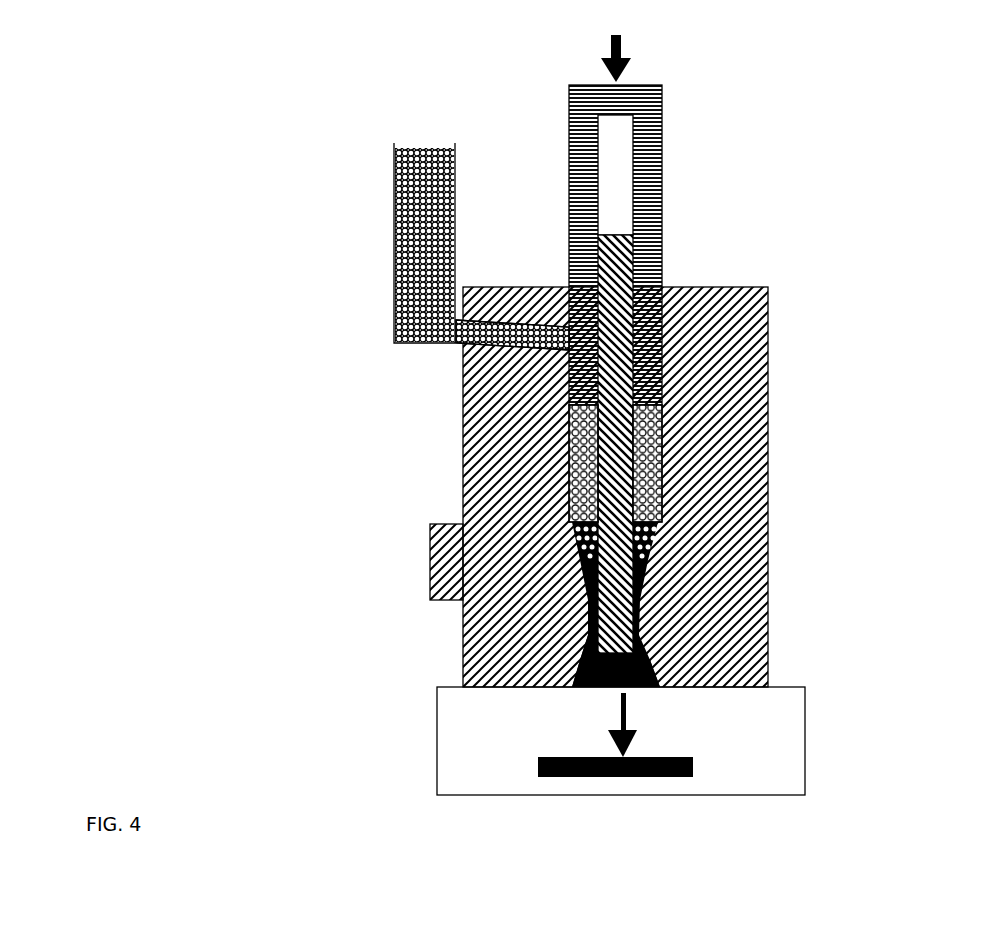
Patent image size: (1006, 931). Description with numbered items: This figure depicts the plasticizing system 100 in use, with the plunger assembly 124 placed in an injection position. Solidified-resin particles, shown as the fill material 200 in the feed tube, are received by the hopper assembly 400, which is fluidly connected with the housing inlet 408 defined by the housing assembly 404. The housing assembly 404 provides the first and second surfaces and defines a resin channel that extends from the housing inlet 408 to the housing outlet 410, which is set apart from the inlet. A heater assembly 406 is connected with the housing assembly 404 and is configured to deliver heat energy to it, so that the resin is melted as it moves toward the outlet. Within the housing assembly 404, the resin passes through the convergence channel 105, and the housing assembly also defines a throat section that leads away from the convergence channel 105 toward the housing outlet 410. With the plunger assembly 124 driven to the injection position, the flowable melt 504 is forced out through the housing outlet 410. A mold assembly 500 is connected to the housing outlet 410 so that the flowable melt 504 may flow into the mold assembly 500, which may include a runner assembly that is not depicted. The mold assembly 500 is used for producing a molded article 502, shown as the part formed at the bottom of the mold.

The plasticizing system 100 is at (610, 436).
The plunger assembly 124 is at (663, 252).
The feed material 200 is at (420, 150).
The hopper assembly 400 is at (397, 223).
The housing assembly 404 is at (768, 487).
The heater assembly 406 is at (448, 525).
The housing inlet 408 is at (508, 327).
The convergence channel 105 is at (655, 555).
The flowable melt 504 is at (577, 653).
The housing outlet 410 is at (617, 688).
The mold assembly 500 is at (805, 740).
The molded article 502 is at (698, 770).